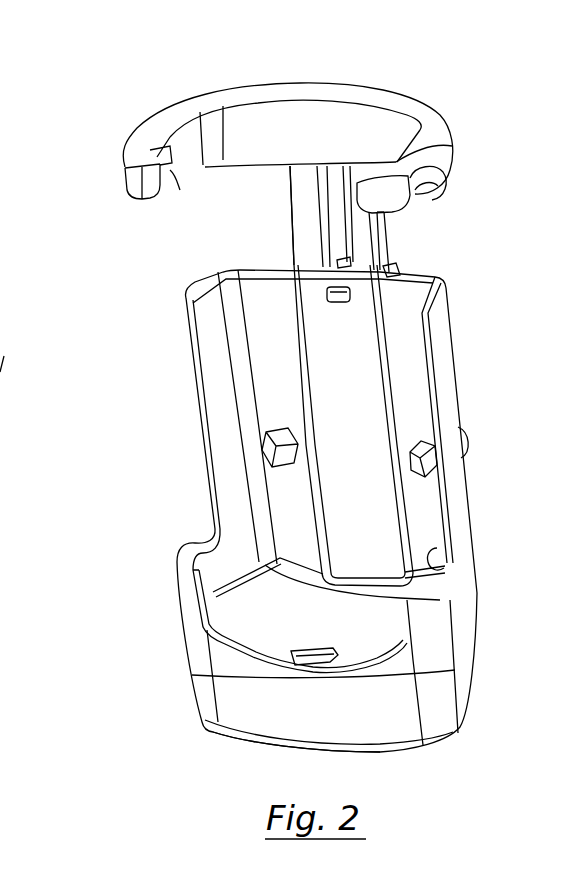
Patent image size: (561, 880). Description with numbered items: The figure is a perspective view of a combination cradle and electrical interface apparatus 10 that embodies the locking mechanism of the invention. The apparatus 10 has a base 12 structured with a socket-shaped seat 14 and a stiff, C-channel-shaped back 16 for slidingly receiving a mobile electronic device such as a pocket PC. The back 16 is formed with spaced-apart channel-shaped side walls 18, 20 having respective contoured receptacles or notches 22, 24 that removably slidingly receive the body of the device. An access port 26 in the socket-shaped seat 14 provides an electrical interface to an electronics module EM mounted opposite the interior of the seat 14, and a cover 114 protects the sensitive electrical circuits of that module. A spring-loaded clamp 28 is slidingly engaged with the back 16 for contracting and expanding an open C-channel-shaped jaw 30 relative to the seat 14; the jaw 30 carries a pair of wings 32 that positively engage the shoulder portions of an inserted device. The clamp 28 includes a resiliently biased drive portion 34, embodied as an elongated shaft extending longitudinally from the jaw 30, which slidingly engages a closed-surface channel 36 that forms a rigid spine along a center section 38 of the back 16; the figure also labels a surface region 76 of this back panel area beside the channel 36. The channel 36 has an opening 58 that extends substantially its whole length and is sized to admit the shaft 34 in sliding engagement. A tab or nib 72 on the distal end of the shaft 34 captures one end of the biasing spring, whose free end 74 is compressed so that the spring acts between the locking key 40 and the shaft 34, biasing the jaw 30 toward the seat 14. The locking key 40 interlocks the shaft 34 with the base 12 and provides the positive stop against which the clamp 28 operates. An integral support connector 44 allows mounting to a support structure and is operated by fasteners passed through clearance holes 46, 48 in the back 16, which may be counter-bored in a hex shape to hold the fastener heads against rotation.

The combination cradle and electrical interface apparatus 10 is at (478, 86).
The clamp 28 is at (148, 113).
The jaw 30 is at (397, 93).
The wings 32 is at (123, 177).
The tab or nib 72 is at (293, 183).
The drive portion 34 is at (397, 227).
The free end of biasing spring 74 is at (388, 248).
The opening 58 is at (340, 259).
The closed-surface channel 36 is at (395, 268).
The back 16 is at (450, 320).
The side wall 18 is at (188, 322).
The side wall 20 is at (445, 367).
The clearance hole 48 is at (430, 432).
The support connector 44 is at (468, 440).
The notch 24 is at (437, 552).
The center section 38 is at (262, 436).
The central rail 76 is at (330, 317).
The locking key 40 is at (330, 301).
The clearance hole 46 is at (262, 468).
The base 12 is at (170, 621).
The notch 22 is at (197, 545).
The cover 114 is at (193, 695).
The socket-shaped seat 14 is at (290, 622).
The access port 26 is at (340, 652).
The electronics module EM is at (234, 740).